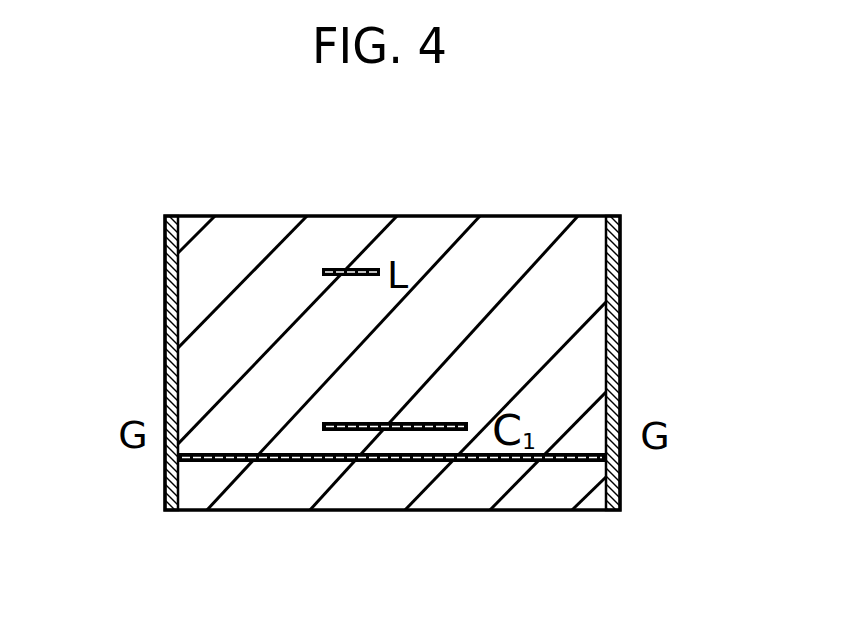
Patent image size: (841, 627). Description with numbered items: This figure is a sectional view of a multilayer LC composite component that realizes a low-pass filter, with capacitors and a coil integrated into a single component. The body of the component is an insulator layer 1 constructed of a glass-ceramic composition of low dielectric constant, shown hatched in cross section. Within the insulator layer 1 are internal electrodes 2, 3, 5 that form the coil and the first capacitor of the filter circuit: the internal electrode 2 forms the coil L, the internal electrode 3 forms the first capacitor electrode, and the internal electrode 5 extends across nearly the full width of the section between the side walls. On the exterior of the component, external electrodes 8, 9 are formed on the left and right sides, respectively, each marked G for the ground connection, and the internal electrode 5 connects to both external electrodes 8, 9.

The insulator layer 1 is at (530, 315).
The internal electrode 2 is at (335, 268).
The internal electrode 3 is at (355, 431).
The internal electrode 5 is at (212, 462).
The external electrode 8 is at (165, 312).
The external electrode 9 is at (620, 338).